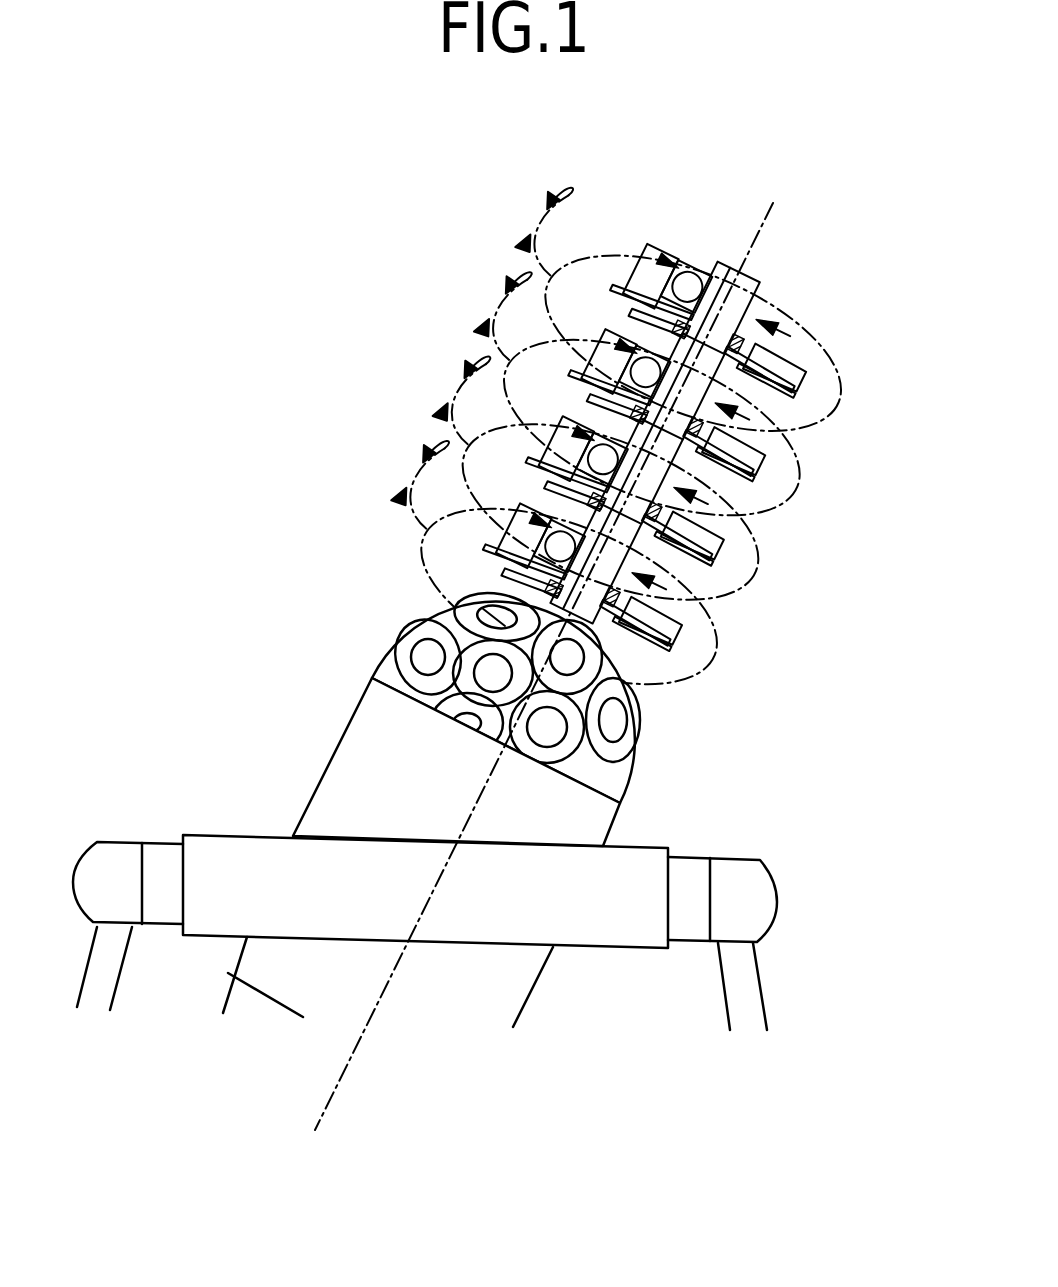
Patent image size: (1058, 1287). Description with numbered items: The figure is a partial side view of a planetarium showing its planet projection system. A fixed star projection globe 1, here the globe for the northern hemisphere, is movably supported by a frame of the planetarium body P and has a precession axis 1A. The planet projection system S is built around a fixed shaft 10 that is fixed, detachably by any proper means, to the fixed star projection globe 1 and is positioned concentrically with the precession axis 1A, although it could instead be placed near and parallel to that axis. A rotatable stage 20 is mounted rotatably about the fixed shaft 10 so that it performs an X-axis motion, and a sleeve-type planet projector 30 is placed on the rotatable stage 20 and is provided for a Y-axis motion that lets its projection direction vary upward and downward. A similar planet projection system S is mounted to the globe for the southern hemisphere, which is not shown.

The fixed star projection globe 1 is at (397, 633).
The precession axis 1A is at (347, 1078).
The fixed shaft 10 is at (753, 277).
The rotatable stage 20 is at (614, 288).
The sleeve-type planet projector 30 is at (690, 281).
The planet projection system S is at (792, 553).
The planetarium body P is at (790, 992).